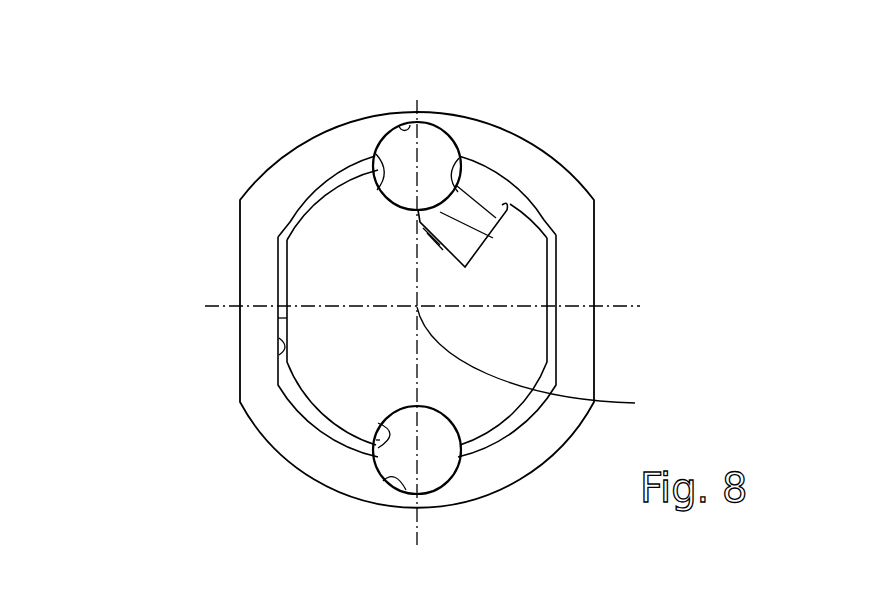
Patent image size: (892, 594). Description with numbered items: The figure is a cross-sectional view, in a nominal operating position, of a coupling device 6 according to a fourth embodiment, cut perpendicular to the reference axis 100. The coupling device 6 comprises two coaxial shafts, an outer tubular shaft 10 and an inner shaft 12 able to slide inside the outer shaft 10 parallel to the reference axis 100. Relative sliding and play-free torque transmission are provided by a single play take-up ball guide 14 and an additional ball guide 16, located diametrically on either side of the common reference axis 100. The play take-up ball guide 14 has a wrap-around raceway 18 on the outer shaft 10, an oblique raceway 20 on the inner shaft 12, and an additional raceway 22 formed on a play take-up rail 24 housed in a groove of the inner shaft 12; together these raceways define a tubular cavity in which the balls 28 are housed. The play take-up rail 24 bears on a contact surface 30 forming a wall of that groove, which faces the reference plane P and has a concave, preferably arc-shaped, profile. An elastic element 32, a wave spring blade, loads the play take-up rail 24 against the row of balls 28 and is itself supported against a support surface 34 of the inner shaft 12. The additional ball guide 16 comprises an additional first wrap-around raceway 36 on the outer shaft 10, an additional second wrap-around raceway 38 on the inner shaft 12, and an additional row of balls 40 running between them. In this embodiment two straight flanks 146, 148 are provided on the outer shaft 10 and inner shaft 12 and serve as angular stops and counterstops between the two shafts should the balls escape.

The coupling device 6 is at (393, 299).
The outer tubular shaft 10 is at (573, 337).
The inner shaft 12 is at (530, 284).
The play take-up ball guide 14 is at (401, 273).
The additional ball guide 16 is at (286, 484).
The wrap-around raceway 18 is at (381, 123).
The oblique raceway 20 is at (376, 150).
The additional raceway 22 is at (427, 151).
The play take-up rail 24 is at (495, 217).
The balls 28 is at (431, 165).
The contact surface 30 is at (508, 203).
The elastic element 32 is at (455, 237).
The support surface 34 is at (418, 222).
The additional first wrap-around raceway 36 is at (385, 479).
The additional second wrap-around raceway 38 is at (397, 458).
The additional balls 40 is at (378, 443).
The reference axis 100 is at (552, 362).
The straight flank 146 is at (285, 350).
The straight flank 148 is at (285, 320).
The reference plane P is at (420, 537).